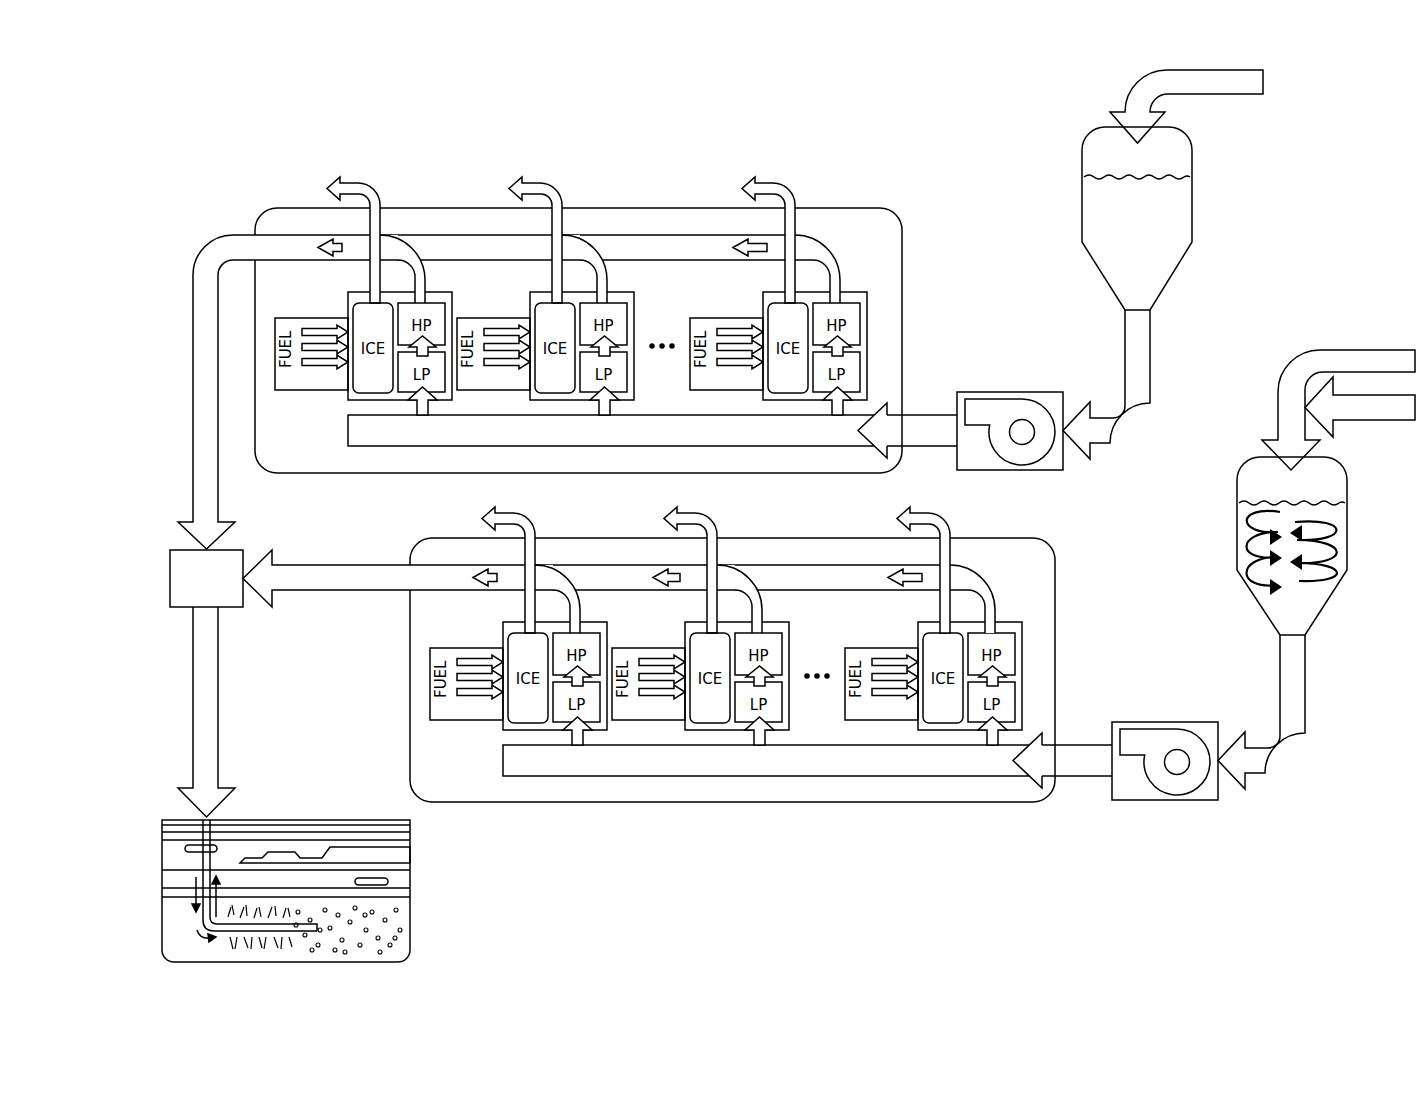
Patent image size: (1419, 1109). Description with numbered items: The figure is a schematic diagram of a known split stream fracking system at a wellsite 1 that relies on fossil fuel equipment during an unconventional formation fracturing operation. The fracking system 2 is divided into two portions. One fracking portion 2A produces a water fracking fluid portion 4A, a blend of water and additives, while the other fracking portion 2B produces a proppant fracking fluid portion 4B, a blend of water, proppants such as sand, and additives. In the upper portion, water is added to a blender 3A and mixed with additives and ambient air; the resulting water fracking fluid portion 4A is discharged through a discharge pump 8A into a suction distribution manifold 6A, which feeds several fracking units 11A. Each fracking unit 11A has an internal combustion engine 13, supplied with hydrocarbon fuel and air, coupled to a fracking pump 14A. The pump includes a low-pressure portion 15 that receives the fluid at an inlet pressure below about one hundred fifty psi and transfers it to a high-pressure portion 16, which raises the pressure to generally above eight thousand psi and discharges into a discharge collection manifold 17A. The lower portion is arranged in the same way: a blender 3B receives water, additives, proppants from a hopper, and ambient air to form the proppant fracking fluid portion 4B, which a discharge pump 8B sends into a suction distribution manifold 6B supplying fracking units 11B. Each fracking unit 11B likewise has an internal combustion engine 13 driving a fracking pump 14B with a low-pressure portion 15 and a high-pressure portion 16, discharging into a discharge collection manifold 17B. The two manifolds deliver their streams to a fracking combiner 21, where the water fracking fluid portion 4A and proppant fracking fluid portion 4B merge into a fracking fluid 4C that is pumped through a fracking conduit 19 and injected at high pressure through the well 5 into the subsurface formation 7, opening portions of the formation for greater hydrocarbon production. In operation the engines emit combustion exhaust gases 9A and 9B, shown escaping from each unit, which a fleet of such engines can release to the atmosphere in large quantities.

The wellsite 1 is at (218, 96).
The fracking system 2 is at (606, 188).
The fracking portion 2A is at (302, 208).
The fracking portion 2B is at (458, 538).
The blender 3A is at (1194, 160).
The blender 3B is at (1348, 490).
The water fracking fluid portion 4A is at (815, 248).
The proppant fracking fluid portion 4B is at (968, 578).
The fracking fluid 4C is at (193, 662).
The well 5 is at (203, 865).
The suction distribution manifold 6A is at (348, 427).
The suction distribution manifold 6B is at (503, 757).
The subsurface formation 7 is at (185, 935).
The discharge pump 8A is at (1010, 472).
The discharge pump 8B is at (1165, 800).
The combustion exhaust gases 9A is at (757, 184).
The combustion exhaust gases 9B is at (907, 515).
The fracking unit 11A is at (853, 291).
The fracking unit 11B is at (1005, 621).
The internal combustion engine 13 is at (763, 313).
The fracking pump 14A is at (948, 280).
The fracking pump 14B is at (1103, 610).
The low-pressure portion 15 is at (860, 373).
The high-pressure portion 16 is at (860, 323).
The discharge collection manifold 17A is at (193, 356).
The discharge collection manifold 17B is at (338, 593).
The fracking conduit 19 is at (193, 740).
The fracking combiner 21 is at (170, 578).